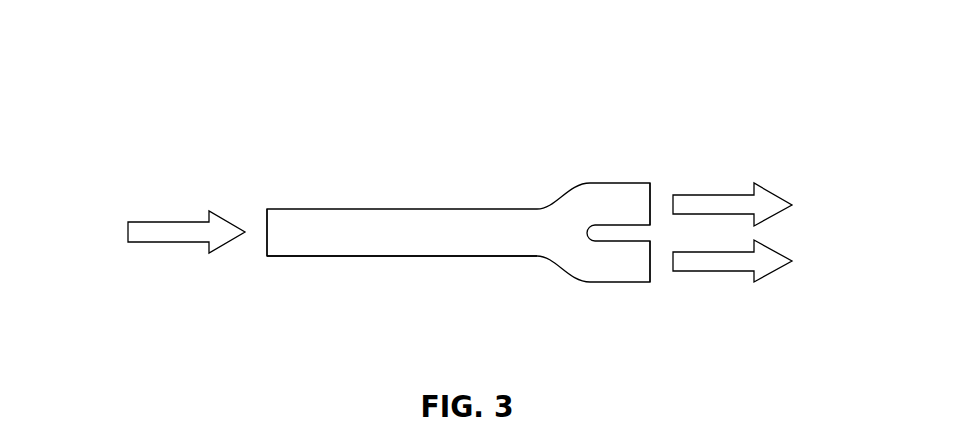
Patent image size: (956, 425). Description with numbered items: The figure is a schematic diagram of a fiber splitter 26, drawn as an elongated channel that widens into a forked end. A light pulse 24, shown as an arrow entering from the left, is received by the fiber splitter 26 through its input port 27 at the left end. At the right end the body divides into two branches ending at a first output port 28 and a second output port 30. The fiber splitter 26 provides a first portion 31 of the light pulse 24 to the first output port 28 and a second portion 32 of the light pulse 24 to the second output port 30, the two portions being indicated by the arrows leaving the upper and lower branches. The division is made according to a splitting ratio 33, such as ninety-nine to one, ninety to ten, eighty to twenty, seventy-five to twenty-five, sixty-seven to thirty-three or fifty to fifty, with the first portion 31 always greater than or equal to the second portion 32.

The light pulse 24 is at (168, 232).
The fiber splitter 26 is at (418, 218).
The input port 27 is at (238, 177).
The first output port 28 is at (660, 178).
The second output port 30 is at (660, 287).
The first portion 31 is at (720, 200).
The second portion 32 is at (720, 262).
The splitting ratio 33 is at (326, 302).